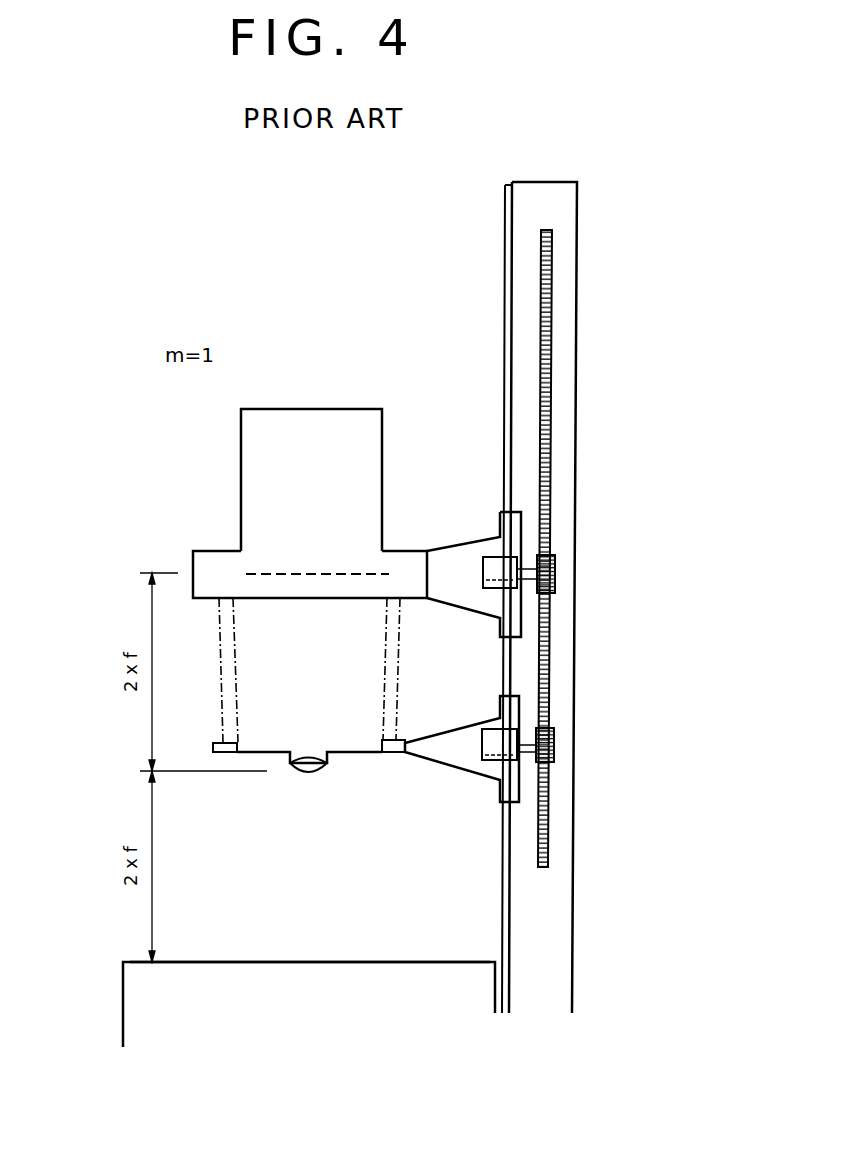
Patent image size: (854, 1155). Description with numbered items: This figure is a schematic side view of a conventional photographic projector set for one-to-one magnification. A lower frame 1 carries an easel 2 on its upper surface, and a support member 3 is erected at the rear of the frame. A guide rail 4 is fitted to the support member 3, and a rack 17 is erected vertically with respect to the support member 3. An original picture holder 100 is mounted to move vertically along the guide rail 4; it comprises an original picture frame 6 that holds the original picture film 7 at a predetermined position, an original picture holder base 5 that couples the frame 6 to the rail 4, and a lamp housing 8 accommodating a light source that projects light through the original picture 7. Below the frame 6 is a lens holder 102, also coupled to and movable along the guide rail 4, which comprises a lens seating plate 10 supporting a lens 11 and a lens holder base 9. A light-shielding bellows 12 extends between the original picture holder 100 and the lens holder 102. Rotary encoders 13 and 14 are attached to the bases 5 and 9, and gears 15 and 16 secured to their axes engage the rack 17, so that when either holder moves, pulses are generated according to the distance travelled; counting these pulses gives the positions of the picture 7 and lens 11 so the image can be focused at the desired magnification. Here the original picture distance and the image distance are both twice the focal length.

The lower frame 1 is at (123, 1024).
The easel 2 is at (240, 962).
The support member 3 is at (577, 380).
The guide rail 4 is at (505, 257).
The original picture holder base 5 is at (468, 537).
The original picture frame 6 is at (400, 552).
The original picture film 7 is at (282, 573).
The lamp housing 8 is at (382, 455).
The lens holder base 9 is at (457, 766).
The lens seating plate 10 is at (360, 755).
The lens 11 is at (310, 778).
The bellows 12 is at (400, 677).
The rotary encoder 13 is at (487, 585).
The rotary encoder 14 is at (482, 738).
The gear 15 is at (555, 568).
The gear 16 is at (554, 742).
The rack 17 is at (550, 652).
The original picture holder 100 is at (126, 536).
The lens holder 102 is at (128, 748).